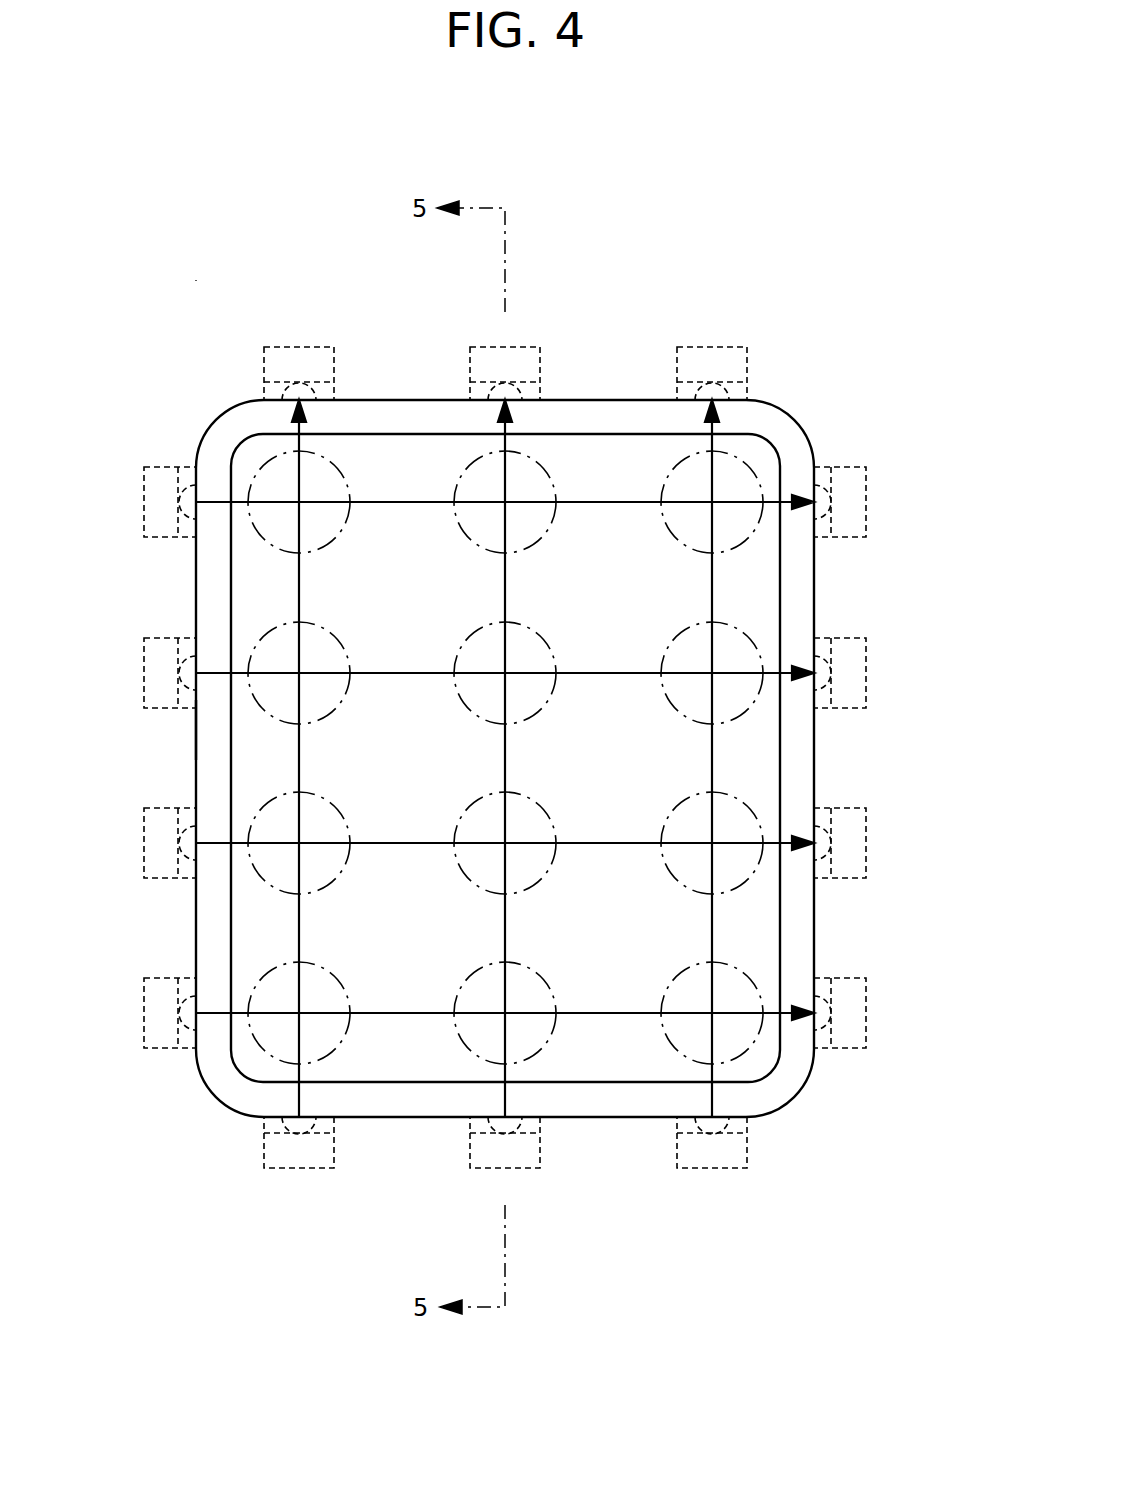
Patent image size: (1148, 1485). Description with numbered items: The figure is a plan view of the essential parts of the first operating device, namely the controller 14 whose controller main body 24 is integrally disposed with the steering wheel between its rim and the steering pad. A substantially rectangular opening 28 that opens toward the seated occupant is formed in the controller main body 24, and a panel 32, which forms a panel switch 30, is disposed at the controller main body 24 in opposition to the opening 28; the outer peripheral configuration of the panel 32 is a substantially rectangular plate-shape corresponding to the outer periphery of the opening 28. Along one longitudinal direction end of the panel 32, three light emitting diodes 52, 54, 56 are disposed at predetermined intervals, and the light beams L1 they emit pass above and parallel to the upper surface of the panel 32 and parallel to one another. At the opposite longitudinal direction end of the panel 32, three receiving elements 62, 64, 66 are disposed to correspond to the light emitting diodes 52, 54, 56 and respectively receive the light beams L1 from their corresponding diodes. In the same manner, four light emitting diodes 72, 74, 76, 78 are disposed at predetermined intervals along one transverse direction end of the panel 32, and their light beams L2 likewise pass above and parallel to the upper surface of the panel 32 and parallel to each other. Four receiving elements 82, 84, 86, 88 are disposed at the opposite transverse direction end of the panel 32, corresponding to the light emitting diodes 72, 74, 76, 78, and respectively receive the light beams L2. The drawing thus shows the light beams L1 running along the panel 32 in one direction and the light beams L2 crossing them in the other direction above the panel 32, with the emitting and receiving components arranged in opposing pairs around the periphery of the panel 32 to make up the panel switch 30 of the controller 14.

The controller 14 is at (600, 247).
The controller main body 24 is at (402, 357).
The opening 28 is at (232, 622).
The panel switch 30 is at (747, 587).
The panel 32 is at (590, 467).
The light emitting diode 52 is at (298, 1152).
The light emitting diode 54 is at (529, 1152).
The light emitting diode 56 is at (710, 1152).
The receiving element 62 is at (302, 362).
The receiving element 64 is at (508, 362).
The receiving element 66 is at (715, 362).
The light emitting diode 72 is at (162, 502).
The light emitting diode 74 is at (162, 673).
The light emitting diode 76 is at (162, 843).
The light emitting diode 78 is at (162, 1013).
The receiving element 82 is at (850, 505).
The receiving element 84 is at (850, 676).
The receiving element 86 is at (850, 846).
The receiving element 88 is at (850, 1023).
The light beam L1 is at (302, 583).
The light beam L2 is at (415, 505).